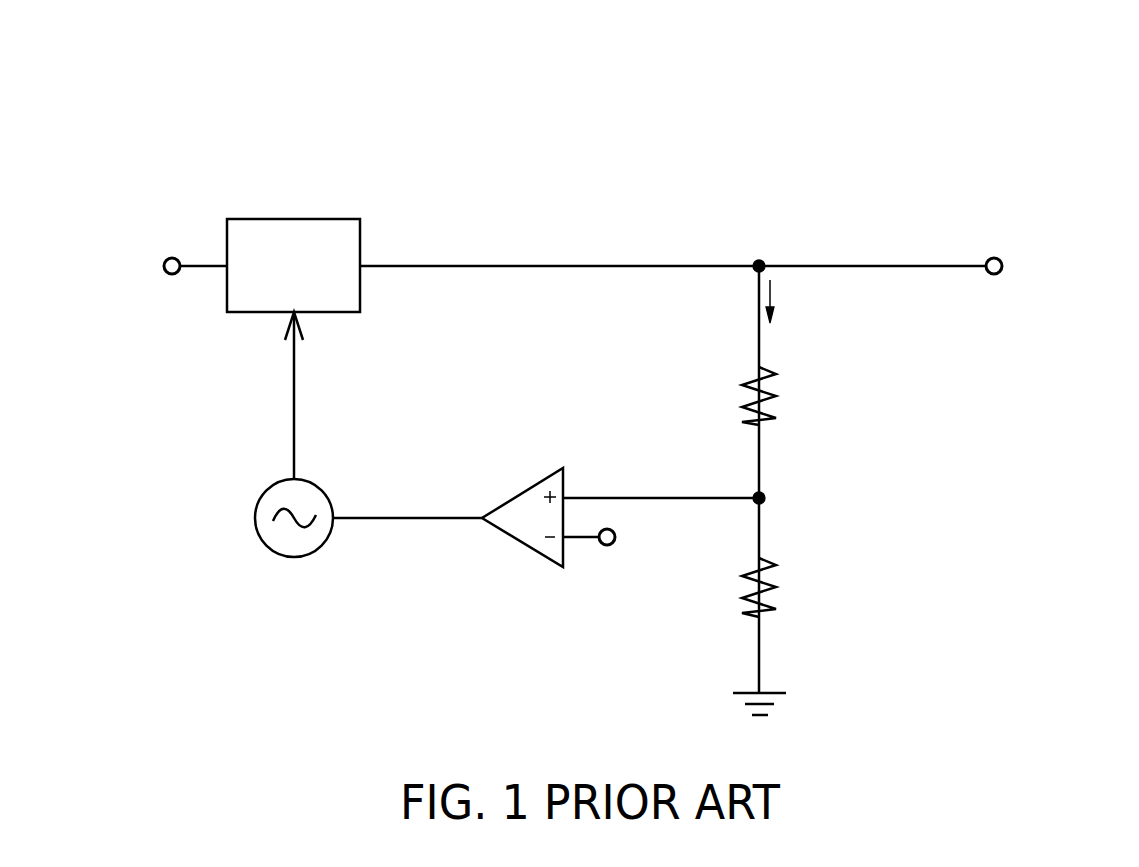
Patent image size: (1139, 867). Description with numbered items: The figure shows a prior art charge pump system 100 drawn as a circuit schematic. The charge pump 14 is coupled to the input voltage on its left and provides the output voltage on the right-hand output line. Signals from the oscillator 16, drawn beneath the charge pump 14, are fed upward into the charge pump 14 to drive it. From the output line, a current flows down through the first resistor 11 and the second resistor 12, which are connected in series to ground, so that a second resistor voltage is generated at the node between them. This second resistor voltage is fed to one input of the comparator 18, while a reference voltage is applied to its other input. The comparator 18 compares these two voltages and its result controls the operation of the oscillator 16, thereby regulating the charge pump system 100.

The charge pump system 100 is at (1030, 110).
The charge pump 14 is at (293, 218).
The first resistor 11 is at (778, 401).
The second resistor 12 is at (778, 593).
The oscillator 16 is at (255, 518).
The comparator 18 is at (522, 490).